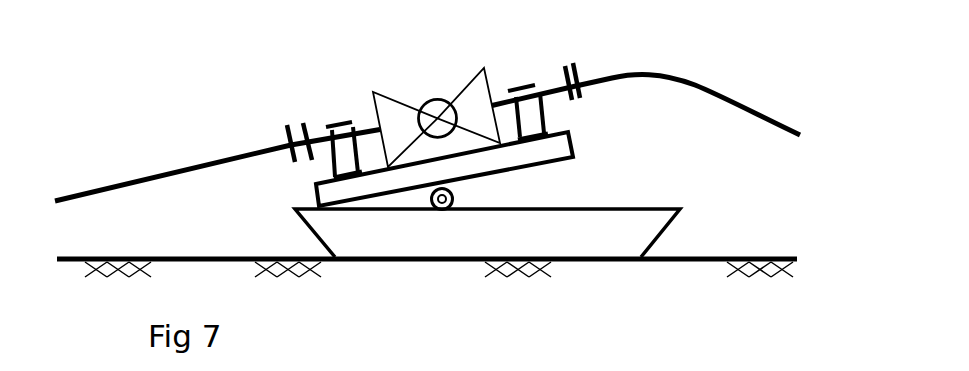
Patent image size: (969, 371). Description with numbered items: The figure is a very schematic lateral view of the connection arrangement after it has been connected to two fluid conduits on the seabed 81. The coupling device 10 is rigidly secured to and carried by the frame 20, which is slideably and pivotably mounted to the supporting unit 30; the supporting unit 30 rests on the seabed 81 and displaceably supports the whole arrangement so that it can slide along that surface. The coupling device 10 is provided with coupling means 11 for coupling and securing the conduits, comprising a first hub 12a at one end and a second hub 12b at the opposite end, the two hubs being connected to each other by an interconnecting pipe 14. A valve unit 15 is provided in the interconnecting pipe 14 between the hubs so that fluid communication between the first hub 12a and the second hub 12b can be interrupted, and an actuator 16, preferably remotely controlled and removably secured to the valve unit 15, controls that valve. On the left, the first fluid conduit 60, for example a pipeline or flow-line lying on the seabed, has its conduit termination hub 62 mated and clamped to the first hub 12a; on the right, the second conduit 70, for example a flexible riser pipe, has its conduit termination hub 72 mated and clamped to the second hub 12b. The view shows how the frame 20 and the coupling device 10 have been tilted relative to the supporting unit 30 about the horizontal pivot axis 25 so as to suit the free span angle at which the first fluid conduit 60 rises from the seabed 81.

The coupling device 10 is at (436, 97).
The coupling means 11 is at (315, 112).
The first hub 12a is at (302, 122).
The second hub 12b is at (563, 104).
The interconnecting pipe 14 is at (505, 97).
The valve unit 15 is at (393, 110).
The actuator 16 is at (418, 88).
The frame 20 is at (574, 150).
The horizontal pivot axis 25 is at (455, 197).
The supporting unit 30 is at (650, 213).
The first fluid conduit 60 is at (184, 174).
The conduit termination hub 62 is at (288, 128).
The second conduit 70 is at (689, 76).
The conduit termination hub 72 is at (578, 70).
The seabed 81 is at (728, 256).